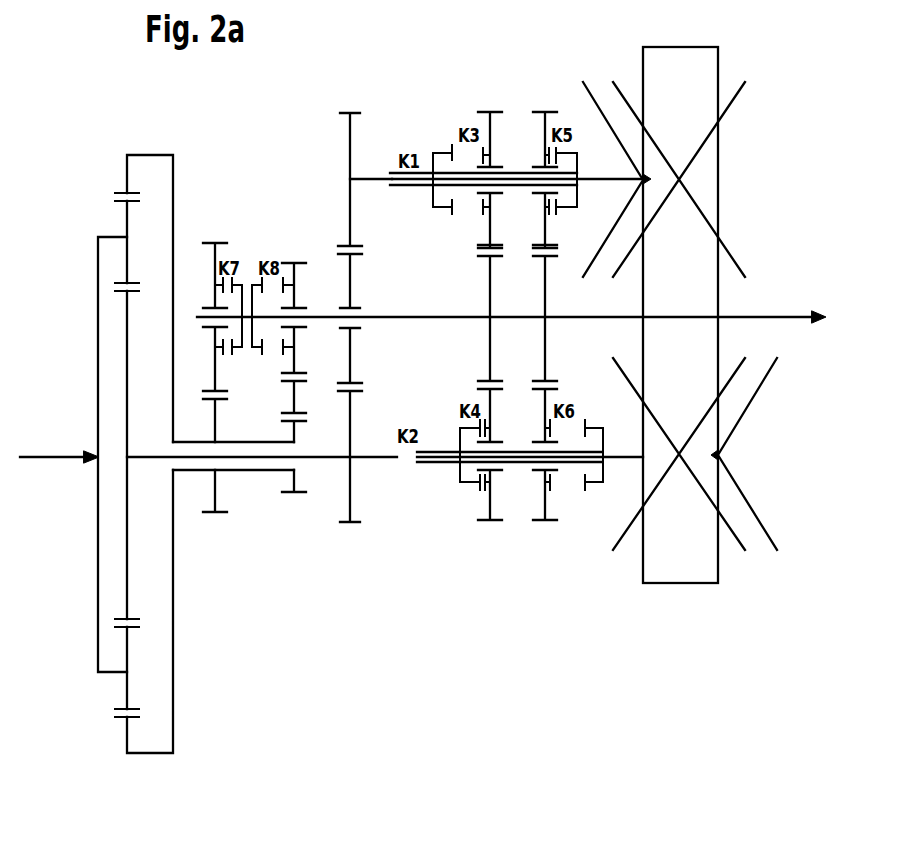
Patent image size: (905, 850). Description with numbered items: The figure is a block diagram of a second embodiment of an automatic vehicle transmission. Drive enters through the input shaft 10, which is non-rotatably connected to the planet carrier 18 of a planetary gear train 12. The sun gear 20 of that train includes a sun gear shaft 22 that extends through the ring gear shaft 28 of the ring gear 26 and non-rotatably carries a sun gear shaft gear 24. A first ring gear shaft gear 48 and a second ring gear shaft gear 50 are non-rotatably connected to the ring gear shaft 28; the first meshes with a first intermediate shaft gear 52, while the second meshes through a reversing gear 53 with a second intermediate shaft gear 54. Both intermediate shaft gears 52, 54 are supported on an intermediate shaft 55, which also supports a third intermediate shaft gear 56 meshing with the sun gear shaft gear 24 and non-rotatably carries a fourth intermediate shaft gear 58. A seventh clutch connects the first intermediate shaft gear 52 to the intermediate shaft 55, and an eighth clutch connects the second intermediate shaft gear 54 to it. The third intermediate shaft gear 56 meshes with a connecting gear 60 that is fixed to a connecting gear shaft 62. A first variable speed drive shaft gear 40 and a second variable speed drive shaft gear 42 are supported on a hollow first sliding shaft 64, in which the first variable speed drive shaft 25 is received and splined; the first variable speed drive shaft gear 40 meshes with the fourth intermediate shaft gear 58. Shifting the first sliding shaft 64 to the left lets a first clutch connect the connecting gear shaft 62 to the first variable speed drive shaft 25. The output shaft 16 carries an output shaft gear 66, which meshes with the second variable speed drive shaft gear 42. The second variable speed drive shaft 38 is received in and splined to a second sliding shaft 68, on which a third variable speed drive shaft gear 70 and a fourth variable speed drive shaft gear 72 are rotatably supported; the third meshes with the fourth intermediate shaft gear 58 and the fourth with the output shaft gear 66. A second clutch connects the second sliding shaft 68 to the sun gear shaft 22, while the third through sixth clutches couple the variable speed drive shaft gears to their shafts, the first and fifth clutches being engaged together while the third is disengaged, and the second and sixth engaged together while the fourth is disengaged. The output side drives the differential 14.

The input shaft 10 is at (50, 459).
The planetary gear train 12 is at (101, 454).
The differential 14 is at (742, 466).
The output shaft 16 is at (778, 316).
The planet carrier 18 is at (97, 405).
The sun gear 20 is at (126, 558).
The sun gear shaft 22 is at (376, 459).
The sun gear shaft gear 24 is at (351, 524).
The first variable speed drive shaft 25 is at (594, 177).
The ring gear 26 is at (150, 755).
The ring gear shaft 28 is at (253, 472).
The second variable speed drive shaft 38 is at (624, 460).
The first variable speed drive shaft gear 40 is at (492, 126).
The second variable speed drive shaft gear 42 is at (550, 111).
The first ring gear shaft gear 48 is at (216, 514).
The second ring gear shaft gear 50 is at (295, 494).
The first intermediate shaft gear 52 is at (212, 242).
The reversing gear 53 is at (292, 398).
The second intermediate shaft gear 54 is at (296, 262).
The intermediate shaft 55 is at (418, 319).
The third intermediate shaft gear 56 is at (352, 284).
The fourth intermediate shaft gear 58 is at (488, 284).
The connecting gear 60 is at (348, 129).
The connecting gear shaft 62 is at (370, 178).
The first sliding shaft 64 is at (517, 188).
The output shaft gear 66 is at (548, 346).
The second sliding shaft 68 is at (517, 465).
The third variable speed drive shaft gear 70 is at (486, 522).
The fourth variable speed drive shaft gear 72 is at (543, 522).